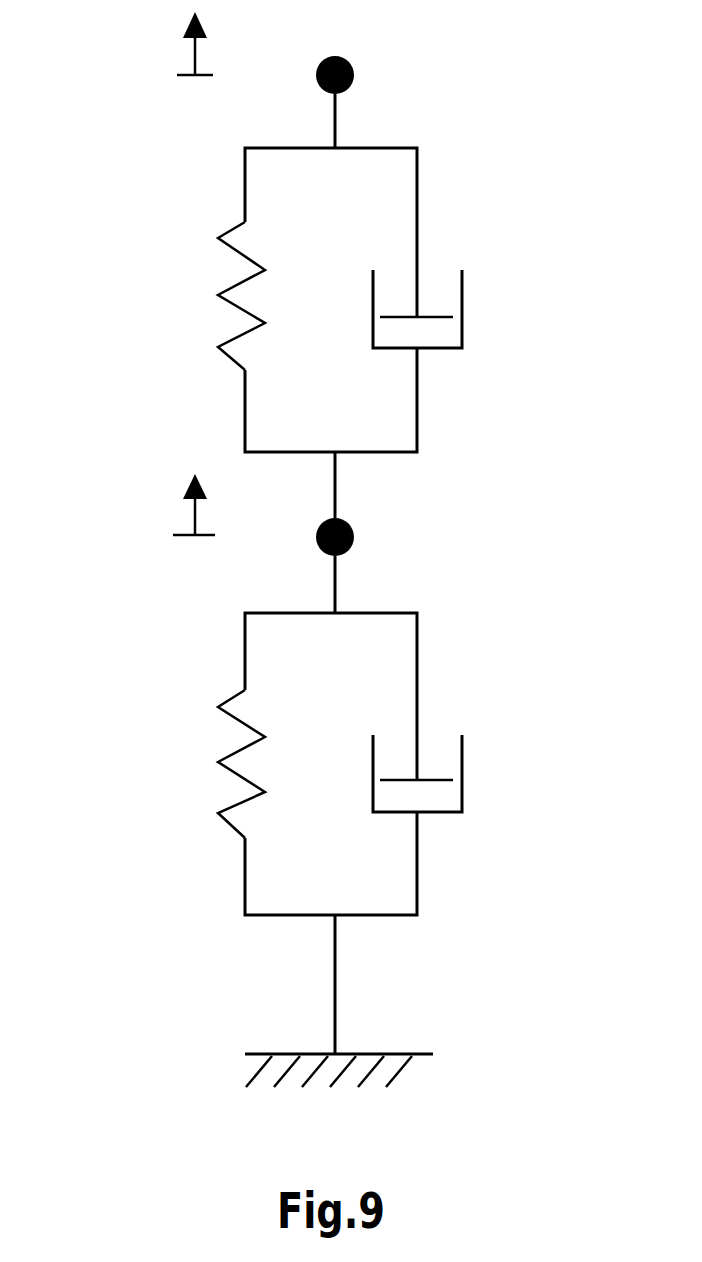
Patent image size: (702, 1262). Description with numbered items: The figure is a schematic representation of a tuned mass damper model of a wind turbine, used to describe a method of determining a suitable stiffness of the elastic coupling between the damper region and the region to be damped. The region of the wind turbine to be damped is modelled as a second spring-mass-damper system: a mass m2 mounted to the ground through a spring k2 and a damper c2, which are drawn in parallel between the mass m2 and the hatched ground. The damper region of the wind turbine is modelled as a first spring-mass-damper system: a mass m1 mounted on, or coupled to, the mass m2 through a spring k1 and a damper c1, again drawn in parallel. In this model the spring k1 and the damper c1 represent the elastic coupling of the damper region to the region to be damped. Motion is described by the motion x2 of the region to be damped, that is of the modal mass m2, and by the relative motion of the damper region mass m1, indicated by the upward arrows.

The mass m1 is at (380, 101).
The mass m2 is at (384, 564).
The spring k1 is at (203, 296).
The spring k2 is at (203, 764).
The damper c1 is at (458, 309).
The damper c2 is at (463, 773).
The motion x2 is at (158, 507).